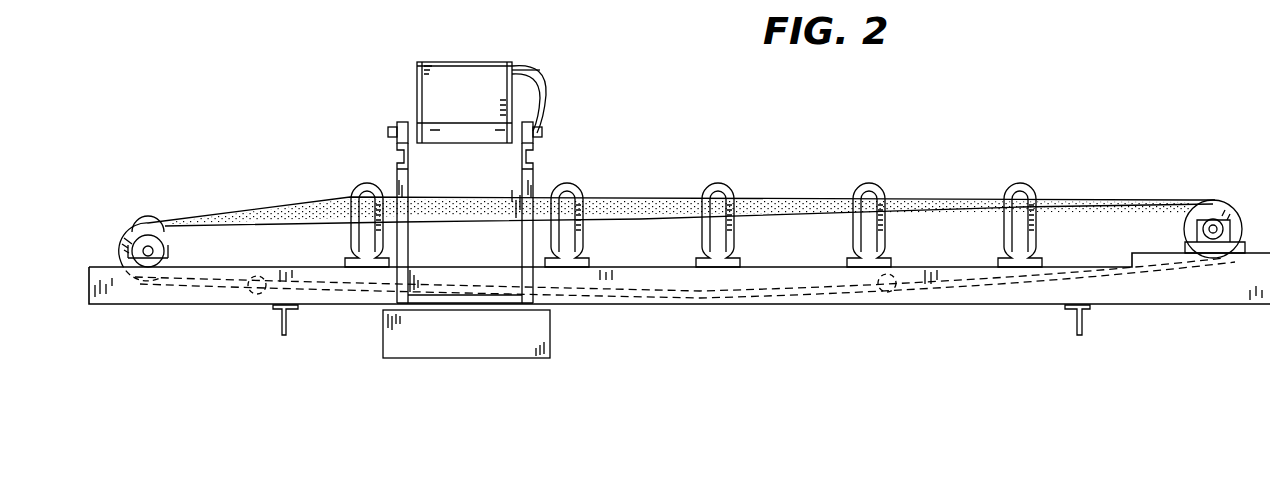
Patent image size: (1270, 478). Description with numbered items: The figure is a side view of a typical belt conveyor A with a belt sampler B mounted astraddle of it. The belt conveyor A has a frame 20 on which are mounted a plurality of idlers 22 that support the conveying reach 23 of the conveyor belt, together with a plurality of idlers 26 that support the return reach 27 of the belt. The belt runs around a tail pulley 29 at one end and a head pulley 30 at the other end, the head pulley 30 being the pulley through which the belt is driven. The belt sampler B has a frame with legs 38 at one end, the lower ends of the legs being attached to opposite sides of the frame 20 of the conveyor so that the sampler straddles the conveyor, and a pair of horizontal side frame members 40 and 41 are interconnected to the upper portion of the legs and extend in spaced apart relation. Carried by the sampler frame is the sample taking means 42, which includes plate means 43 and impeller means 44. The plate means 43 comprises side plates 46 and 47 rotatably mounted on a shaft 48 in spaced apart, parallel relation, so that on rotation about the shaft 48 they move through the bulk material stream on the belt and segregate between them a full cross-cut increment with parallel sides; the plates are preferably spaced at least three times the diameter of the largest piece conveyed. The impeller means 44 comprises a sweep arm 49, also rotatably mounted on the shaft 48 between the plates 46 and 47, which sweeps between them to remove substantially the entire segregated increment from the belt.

The frame 20 is at (222, 306).
The idlers 22 is at (1020, 182).
The conveying reach 23 is at (1118, 165).
The idlers 26 is at (256, 295).
The return reach 27 is at (703, 294).
The tail pulley 29 is at (1238, 170).
The head pulley 30 is at (136, 234).
The legs 38 is at (512, 182).
The horizontal side frame member 40 is at (535, 157).
The horizontal side frame member 41 is at (402, 152).
The sample taking means 42 is at (412, 84).
The plate means 43 is at (412, 100).
The impeller means 44 is at (446, 58).
The side plate 46 is at (416, 68).
The side plate 47 is at (542, 76).
The shaft 48 is at (390, 133).
The sweep arm 49 is at (488, 72).
The belt conveyor A is at (810, 310).
The belt sampler B is at (482, 50).